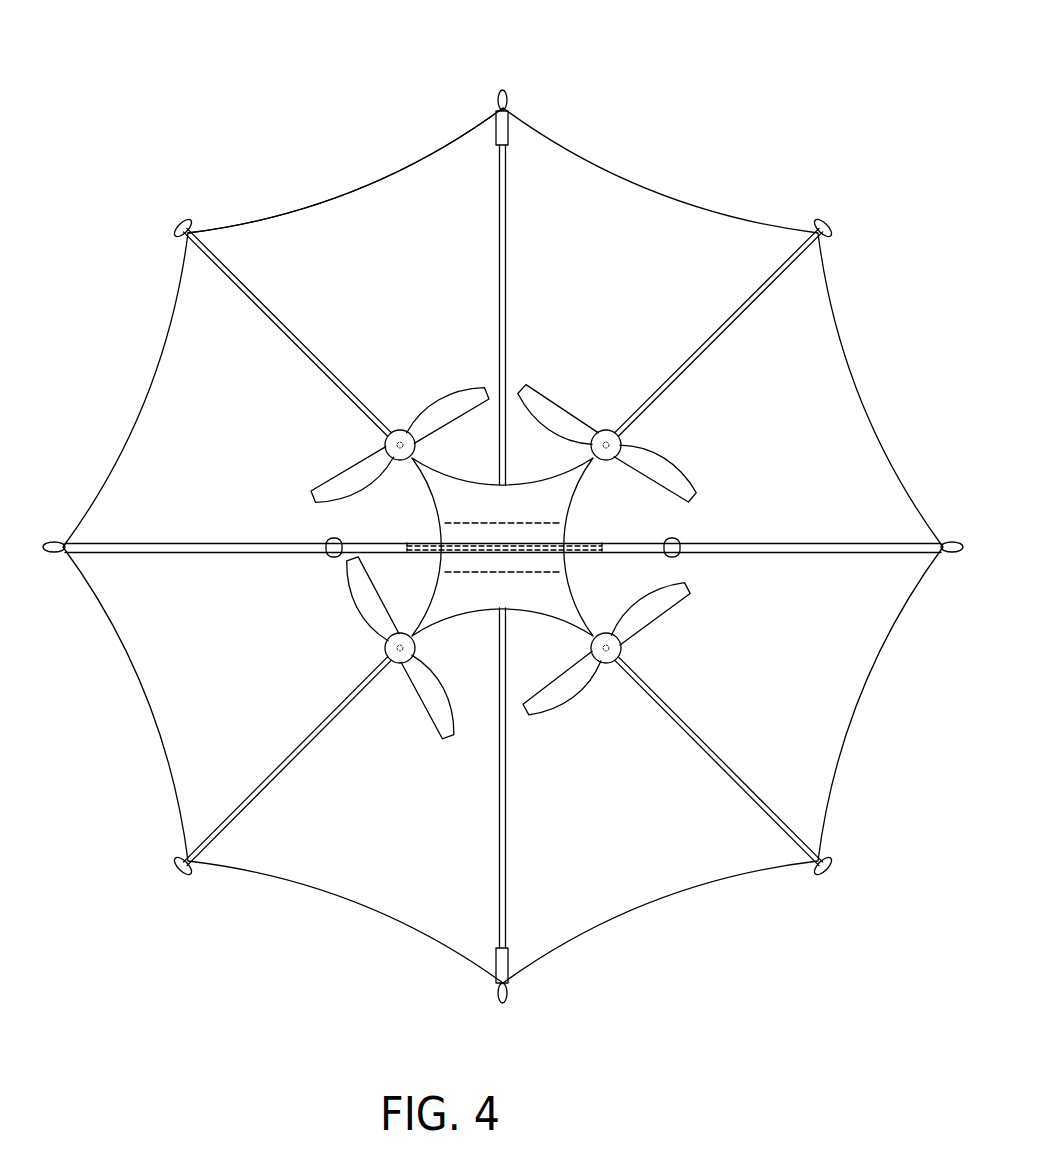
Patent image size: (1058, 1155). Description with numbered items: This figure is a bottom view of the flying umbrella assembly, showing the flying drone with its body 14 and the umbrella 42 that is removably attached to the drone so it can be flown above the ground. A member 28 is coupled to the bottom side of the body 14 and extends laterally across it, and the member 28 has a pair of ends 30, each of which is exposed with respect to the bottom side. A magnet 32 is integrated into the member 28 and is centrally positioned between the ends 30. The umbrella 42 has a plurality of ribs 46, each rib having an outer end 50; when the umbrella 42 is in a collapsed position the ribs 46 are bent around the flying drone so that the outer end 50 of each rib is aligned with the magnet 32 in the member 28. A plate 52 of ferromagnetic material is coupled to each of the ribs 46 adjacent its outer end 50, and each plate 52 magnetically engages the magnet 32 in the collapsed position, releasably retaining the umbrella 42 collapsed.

The body 14 is at (456, 595).
The member 28 is at (622, 557).
The ends 30 is at (680, 540).
The magnet 32 is at (407, 545).
The umbrella 42 is at (668, 173).
The ribs 46 is at (500, 240).
The outer end 50 is at (502, 90).
The plates 52 is at (497, 130).